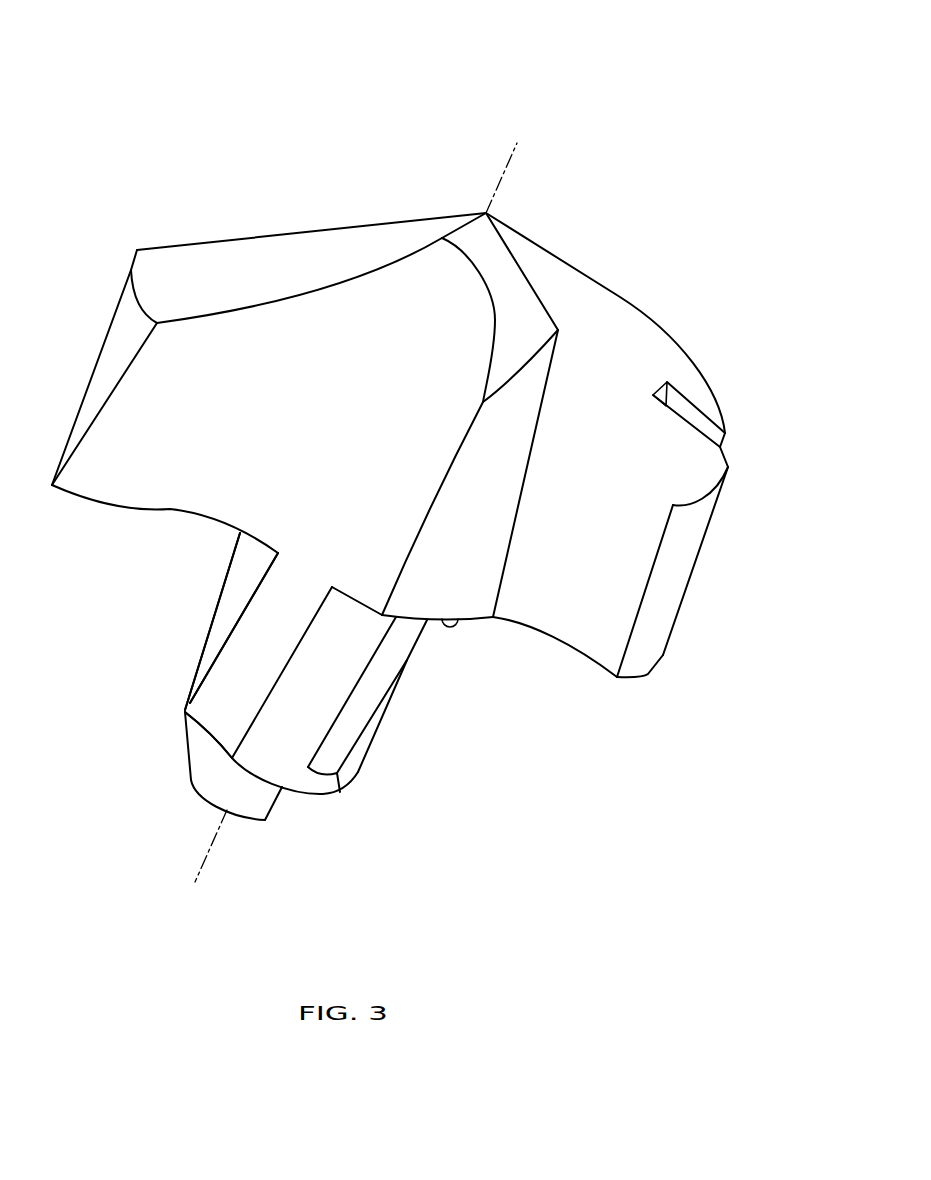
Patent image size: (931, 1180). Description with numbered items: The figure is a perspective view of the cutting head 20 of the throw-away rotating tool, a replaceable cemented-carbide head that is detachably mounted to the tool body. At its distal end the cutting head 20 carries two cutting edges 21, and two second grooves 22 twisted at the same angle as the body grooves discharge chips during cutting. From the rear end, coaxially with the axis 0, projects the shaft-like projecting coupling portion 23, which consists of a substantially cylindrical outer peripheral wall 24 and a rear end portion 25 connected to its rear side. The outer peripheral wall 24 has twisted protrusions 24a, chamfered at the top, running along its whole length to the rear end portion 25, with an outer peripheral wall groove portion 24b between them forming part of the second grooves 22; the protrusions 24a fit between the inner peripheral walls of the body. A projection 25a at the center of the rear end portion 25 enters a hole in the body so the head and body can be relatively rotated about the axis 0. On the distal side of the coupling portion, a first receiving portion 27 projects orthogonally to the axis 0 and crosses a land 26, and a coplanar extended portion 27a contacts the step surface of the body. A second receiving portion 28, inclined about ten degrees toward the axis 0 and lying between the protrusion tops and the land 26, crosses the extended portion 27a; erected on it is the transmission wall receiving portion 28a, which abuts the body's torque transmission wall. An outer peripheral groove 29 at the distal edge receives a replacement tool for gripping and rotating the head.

The cutting head 20 is at (661, 97).
The axis 0 is at (512, 158).
The cutting edges 21 is at (308, 293).
The second grooves 22 is at (165, 498).
The projecting coupling portion 23 is at (135, 733).
The outer peripheral wall 24 is at (231, 621).
The protrusions 24a is at (222, 623).
The outer peripheral wall groove portion 24b is at (218, 697).
The rear end portion 25 is at (123, 323).
The projection 25a is at (212, 794).
The land 26 is at (688, 548).
The first receiving portion 27 is at (643, 677).
The extended portion 27a is at (455, 622).
The second receiving portion 28 is at (465, 548).
The transmission wall receiving portion 28a is at (570, 624).
The outer peripheral groove 29 is at (710, 443).